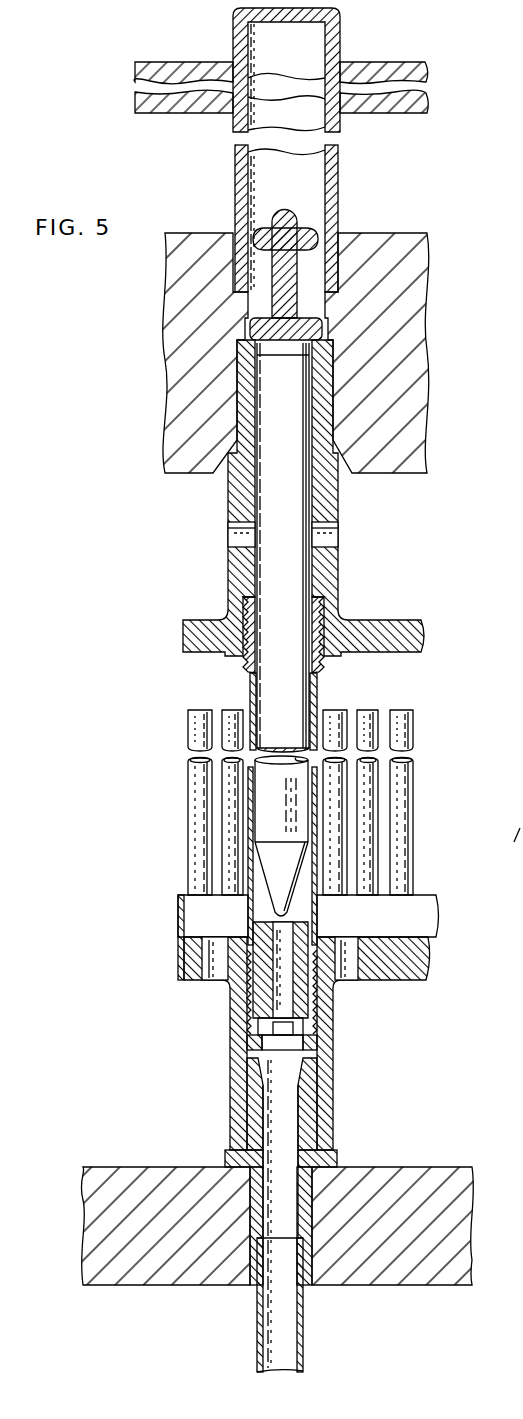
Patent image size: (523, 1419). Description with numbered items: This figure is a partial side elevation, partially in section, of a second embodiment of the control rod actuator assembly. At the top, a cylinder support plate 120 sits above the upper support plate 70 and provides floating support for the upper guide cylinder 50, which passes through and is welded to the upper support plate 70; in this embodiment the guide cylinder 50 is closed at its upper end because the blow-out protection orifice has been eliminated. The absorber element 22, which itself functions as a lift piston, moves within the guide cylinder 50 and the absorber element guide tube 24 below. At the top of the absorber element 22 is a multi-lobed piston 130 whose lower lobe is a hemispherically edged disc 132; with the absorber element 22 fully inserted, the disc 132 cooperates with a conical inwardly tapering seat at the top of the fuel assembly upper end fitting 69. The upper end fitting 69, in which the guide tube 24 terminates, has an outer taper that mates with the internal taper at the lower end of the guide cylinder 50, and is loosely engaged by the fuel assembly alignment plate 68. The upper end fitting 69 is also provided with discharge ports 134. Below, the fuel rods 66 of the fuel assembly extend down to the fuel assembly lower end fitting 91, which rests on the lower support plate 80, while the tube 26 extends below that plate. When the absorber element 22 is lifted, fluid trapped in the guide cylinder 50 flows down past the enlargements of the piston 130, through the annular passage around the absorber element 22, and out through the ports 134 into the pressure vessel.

The cylinder support plate 120 is at (412, 66).
The upper support plate 70 is at (418, 117).
The upper guide cylinder 50 is at (340, 181).
The multi-lobed piston 130 is at (309, 259).
The fuel assembly alignment plate 68 is at (427, 356).
The hemispherically edged disc 132 is at (248, 333).
The fuel assembly upper end fitting 69 is at (338, 575).
The discharge ports 134 is at (228, 538).
The absorber element 22 is at (283, 580).
The absorber element guide tube 24 is at (317, 708).
The fuel rods 66 is at (413, 791).
The fuel assembly lower end fitting 91 is at (393, 978).
The lower support plate 80 is at (383, 1167).
The outlet tube 26 is at (303, 1330).